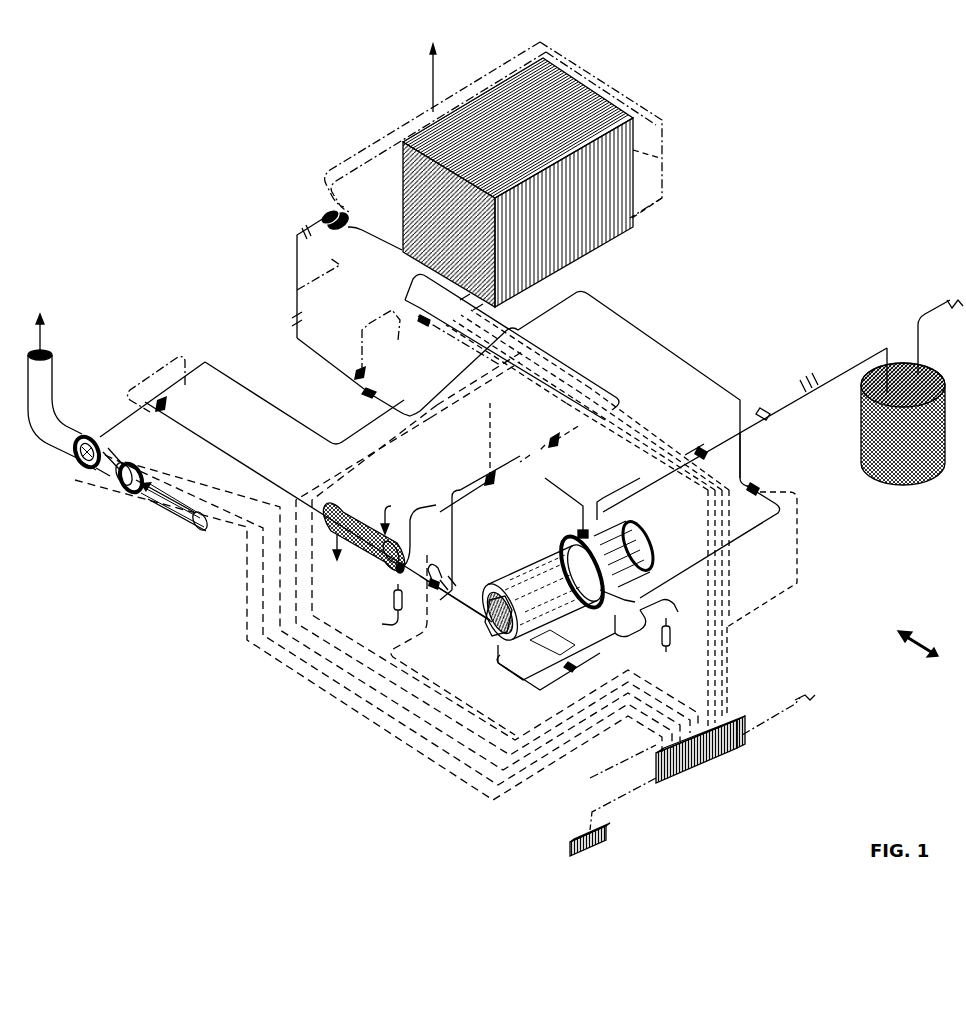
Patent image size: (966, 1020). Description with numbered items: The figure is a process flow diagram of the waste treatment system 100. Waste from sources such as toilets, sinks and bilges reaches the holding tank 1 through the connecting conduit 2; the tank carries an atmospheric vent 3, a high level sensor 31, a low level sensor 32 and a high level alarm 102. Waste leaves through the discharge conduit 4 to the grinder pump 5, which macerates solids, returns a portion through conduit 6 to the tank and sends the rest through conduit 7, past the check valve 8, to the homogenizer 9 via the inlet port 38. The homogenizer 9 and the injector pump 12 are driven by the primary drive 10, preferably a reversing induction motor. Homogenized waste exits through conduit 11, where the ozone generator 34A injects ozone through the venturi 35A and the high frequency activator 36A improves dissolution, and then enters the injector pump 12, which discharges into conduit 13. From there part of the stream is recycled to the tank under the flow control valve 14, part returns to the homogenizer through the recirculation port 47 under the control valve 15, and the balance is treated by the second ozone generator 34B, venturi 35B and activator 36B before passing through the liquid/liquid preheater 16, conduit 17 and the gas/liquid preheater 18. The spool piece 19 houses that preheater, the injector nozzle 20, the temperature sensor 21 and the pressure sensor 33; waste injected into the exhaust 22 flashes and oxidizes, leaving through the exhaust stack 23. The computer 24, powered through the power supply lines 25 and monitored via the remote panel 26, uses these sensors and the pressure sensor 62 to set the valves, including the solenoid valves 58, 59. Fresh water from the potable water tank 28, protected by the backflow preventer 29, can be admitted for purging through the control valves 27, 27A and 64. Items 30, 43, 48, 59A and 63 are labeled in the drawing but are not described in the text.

The holding tank 1 is at (400, 171).
The connecting conduit 2 is at (610, 100).
The high level alarm 102 is at (640, 115).
The atmospheric vent 3 is at (433, 99).
The discharge conduit 4 is at (400, 245).
The grinder pump 5 is at (332, 210).
The conduit 6 is at (460, 300).
The conduit 7 is at (305, 234).
The check valve 8 is at (296, 318).
The homogenizer 9 is at (640, 588).
The primary drive 10 is at (525, 575).
The conduit 11 is at (625, 608).
The injector pump 12 is at (490, 618).
The conduit 13 is at (460, 610).
The flow control valve 14 is at (488, 478).
The control valve 15 is at (552, 438).
The preheater 16 is at (362, 515).
The conduit 17 is at (225, 440).
The preheater 18 is at (84, 464).
The spool piece 19 is at (92, 438).
The injector nozzle 20 is at (98, 470).
The temperature sensor 21 is at (120, 468).
The exhaust 22 is at (160, 503).
The exhaust stack 23 is at (50, 377).
The computer 24 is at (712, 753).
The power supply lines 25 is at (808, 696).
The remote panel 26 is at (606, 840).
The control valve 27 is at (698, 444).
The control valve 27A is at (745, 478).
The potable water tank 28 is at (866, 440).
The backflow preventer 29 is at (790, 400).
The vent pipe 30 is at (922, 322).
The high level sensor 31 is at (636, 145).
The low level sensor 32 is at (632, 217).
The pressure sensor 33 is at (108, 435).
The ozone generator 34A is at (668, 648).
The second ozone generator 34B is at (392, 620).
The venturi 35A is at (626, 636).
The venturi 35B is at (410, 552).
The high frequency activator 36A is at (568, 663).
The high frequency activator 36B is at (436, 510).
The inlet port 38 is at (582, 527).
The pump outlet 43 is at (632, 582).
The recirculation port 47 is at (604, 530).
The coupling 48 is at (565, 553).
The solenoid valve 58 is at (440, 572).
The solenoid valve 59 is at (366, 392).
The valve 59A is at (362, 350).
The pressure sensor 62 is at (300, 290).
The line 63 is at (612, 770).
The control valve 64 is at (188, 378).
The waste treatment system 100 is at (915, 640).